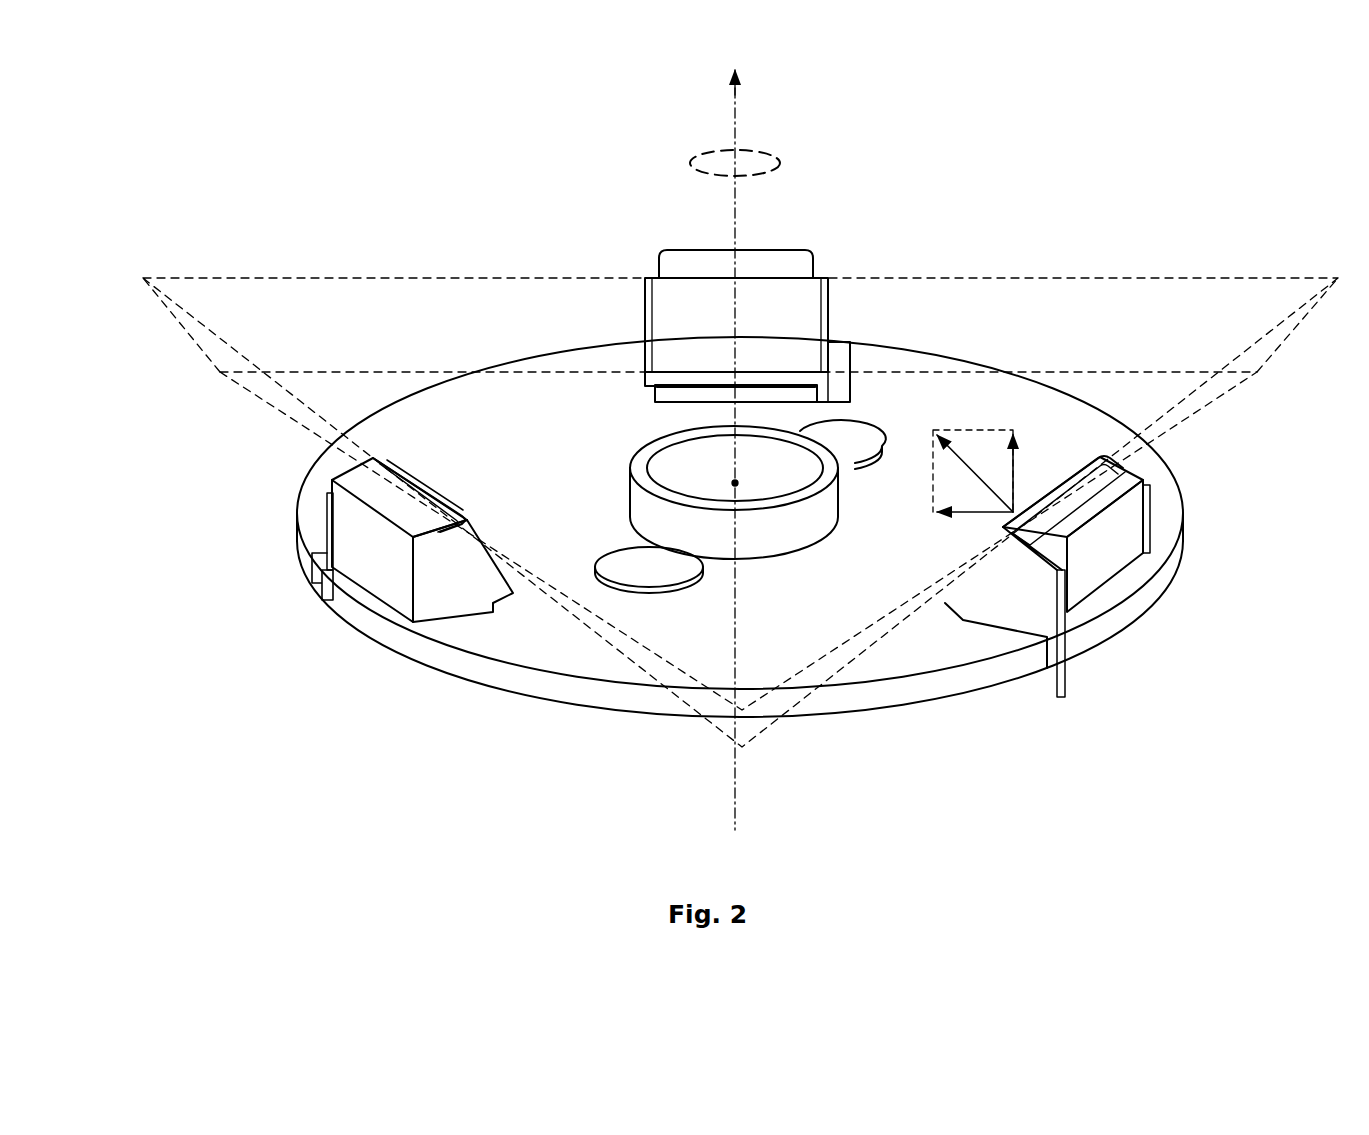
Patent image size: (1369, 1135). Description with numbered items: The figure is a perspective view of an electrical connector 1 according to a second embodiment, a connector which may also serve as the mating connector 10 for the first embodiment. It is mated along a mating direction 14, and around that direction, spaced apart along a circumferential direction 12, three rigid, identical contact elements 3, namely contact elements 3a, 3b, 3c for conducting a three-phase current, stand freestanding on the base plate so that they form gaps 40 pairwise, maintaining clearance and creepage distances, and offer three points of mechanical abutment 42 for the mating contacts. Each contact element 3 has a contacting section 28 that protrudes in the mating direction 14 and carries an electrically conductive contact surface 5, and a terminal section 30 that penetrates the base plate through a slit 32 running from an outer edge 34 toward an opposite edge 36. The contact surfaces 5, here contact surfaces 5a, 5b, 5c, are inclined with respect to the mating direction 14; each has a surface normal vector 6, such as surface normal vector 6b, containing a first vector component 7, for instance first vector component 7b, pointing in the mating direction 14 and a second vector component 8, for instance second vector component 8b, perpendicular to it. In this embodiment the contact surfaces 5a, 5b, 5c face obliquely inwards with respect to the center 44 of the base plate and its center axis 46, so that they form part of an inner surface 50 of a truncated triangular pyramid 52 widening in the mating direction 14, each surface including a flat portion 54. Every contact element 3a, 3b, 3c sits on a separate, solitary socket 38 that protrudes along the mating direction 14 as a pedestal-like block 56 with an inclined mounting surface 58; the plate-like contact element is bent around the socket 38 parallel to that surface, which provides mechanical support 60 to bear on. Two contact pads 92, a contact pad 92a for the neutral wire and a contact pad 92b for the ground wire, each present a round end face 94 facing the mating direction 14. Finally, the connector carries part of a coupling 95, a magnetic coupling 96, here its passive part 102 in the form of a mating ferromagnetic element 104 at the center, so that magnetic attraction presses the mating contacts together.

The electrical connector 1 is at (633, 406).
The mating connector 10 is at (633, 406).
The contact element 3 is at (807, 437).
The first contact element 3a is at (442, 595).
The second contact element 3b is at (1142, 553).
The third contact element 3c is at (693, 272).
The contact surface 5 is at (675, 253).
The contact surface of first contact element 5a is at (498, 533).
The contact surface of second contact element 5b is at (1100, 470).
The contact surface of third contact element 5c is at (688, 312).
The surface normal vector 6 is at (945, 608).
The surface normal vector of second contact surface 6b is at (950, 512).
The first vector component 7 is at (1002, 417).
The first vector component of second contact surface 7b is at (1013, 433).
The second vector component 8 is at (974, 622).
The second vector component of second contact surface 8b is at (1015, 517).
The circumferential direction 12 is at (757, 158).
The mating direction 14 is at (758, 450).
The contacting section 28 is at (540, 313).
The terminal section 30 is at (1076, 698).
The slit 32 is at (835, 360).
The outer edge 34 is at (1010, 688).
The opposite edge 36 is at (395, 380).
The socket 38 is at (805, 443).
The gap 40 is at (413, 355).
The point of mechanical abutment 42 is at (760, 290).
The center 44 is at (855, 445).
The center axis 46 is at (734, 132).
The inner surface 50 is at (1231, 294).
The truncated triangular pyramid 52 is at (1290, 277).
The flat portion 54 is at (795, 310).
The pedestal-like block 56 is at (805, 443).
The mounting surface 58 is at (690, 397).
The mechanical support 60 is at (688, 258).
The contact pad 92 is at (773, 571).
The first contact pad 92a is at (640, 582).
The second contact pad 92b is at (863, 453).
The round end face 94 is at (832, 437).
The coupling 95 is at (805, 654).
The magnetic coupling 96 is at (805, 654).
The passive part 102 is at (805, 654).
The mating ferromagnetic element 104 is at (760, 533).